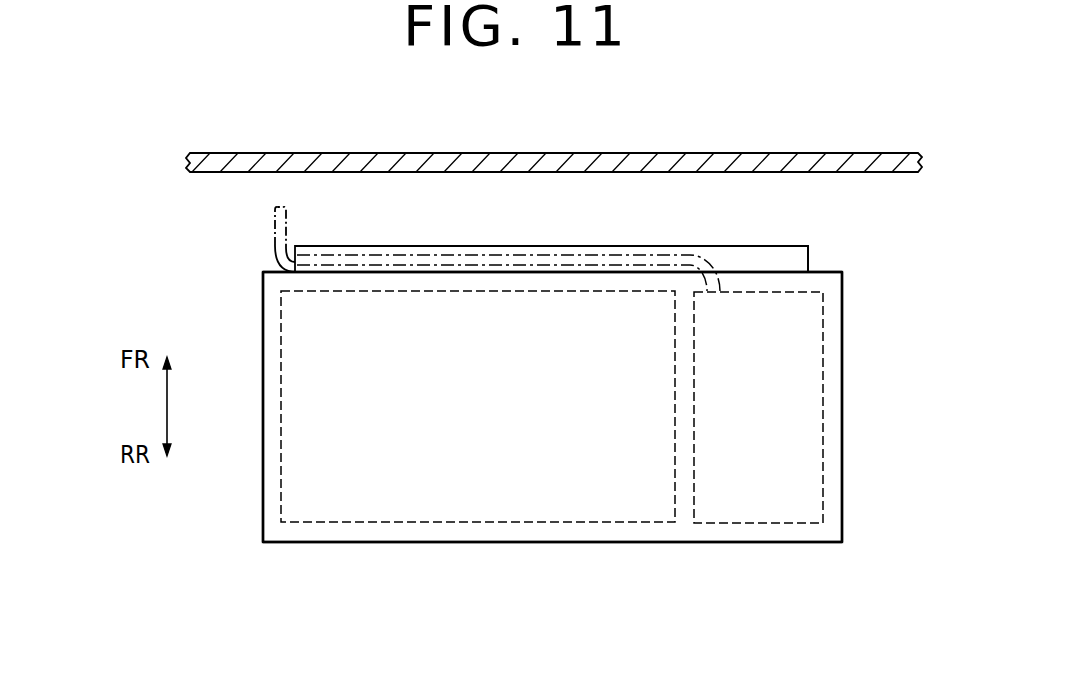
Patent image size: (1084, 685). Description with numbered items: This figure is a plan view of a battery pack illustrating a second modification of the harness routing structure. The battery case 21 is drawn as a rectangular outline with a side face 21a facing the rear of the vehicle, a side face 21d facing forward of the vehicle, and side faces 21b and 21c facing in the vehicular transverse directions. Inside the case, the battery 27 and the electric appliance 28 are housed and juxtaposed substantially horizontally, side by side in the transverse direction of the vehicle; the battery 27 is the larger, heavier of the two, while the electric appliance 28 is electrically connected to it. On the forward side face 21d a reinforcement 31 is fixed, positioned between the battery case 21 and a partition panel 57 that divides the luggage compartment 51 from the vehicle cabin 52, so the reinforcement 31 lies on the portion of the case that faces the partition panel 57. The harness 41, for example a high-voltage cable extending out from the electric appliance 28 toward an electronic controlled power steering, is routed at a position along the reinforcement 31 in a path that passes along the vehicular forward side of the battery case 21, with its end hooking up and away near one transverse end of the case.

The battery case 21 is at (793, 441).
The side face 21a is at (591, 545).
The side face 21b is at (263, 440).
The side face 21c is at (843, 382).
The side face 21d is at (738, 272).
The battery 27 is at (477, 523).
The electric appliance 28 is at (752, 524).
The reinforcement 31 is at (770, 246).
The harness 41 is at (579, 253).
The luggage compartment 51 is at (230, 197).
The vehicle cabin 52 is at (230, 130).
The partition panel 57 is at (836, 163).